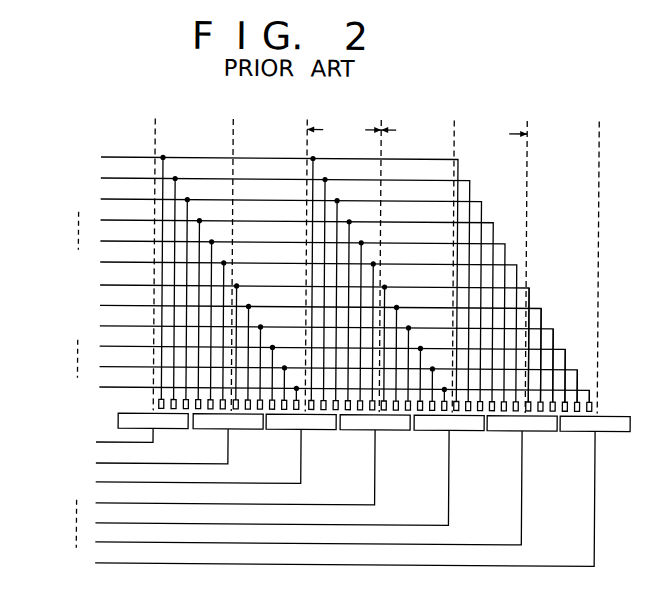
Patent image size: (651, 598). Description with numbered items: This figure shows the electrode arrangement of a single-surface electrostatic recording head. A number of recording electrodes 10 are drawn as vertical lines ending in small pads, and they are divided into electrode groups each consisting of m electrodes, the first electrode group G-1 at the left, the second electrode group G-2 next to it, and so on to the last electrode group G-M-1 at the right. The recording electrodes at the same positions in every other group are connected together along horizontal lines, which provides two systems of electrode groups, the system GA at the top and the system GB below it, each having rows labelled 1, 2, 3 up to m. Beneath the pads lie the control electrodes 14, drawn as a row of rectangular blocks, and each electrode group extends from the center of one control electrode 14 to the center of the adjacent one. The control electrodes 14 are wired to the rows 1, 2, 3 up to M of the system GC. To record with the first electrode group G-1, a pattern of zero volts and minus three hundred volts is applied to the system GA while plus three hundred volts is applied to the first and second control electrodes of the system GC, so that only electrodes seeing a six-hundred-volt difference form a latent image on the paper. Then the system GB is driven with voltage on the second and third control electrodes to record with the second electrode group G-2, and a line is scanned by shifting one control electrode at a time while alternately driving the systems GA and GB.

The recording electrode 10 is at (592, 399).
The control electrode 14 is at (607, 432).
The system GA of electrode groups GA is at (67, 153).
The system GB of electrode groups GB is at (67, 280).
The system GC of control electrodes GC is at (67, 570).
The first electrode group G-1 is at (232, 128).
The second electrode group G-2 is at (306, 128).
The (M-1)th electrode group G-M-1 is at (598, 131).
The row line 1 is at (264, 272).
The row line 2 is at (270, 284).
The row line 3 is at (276, 294).